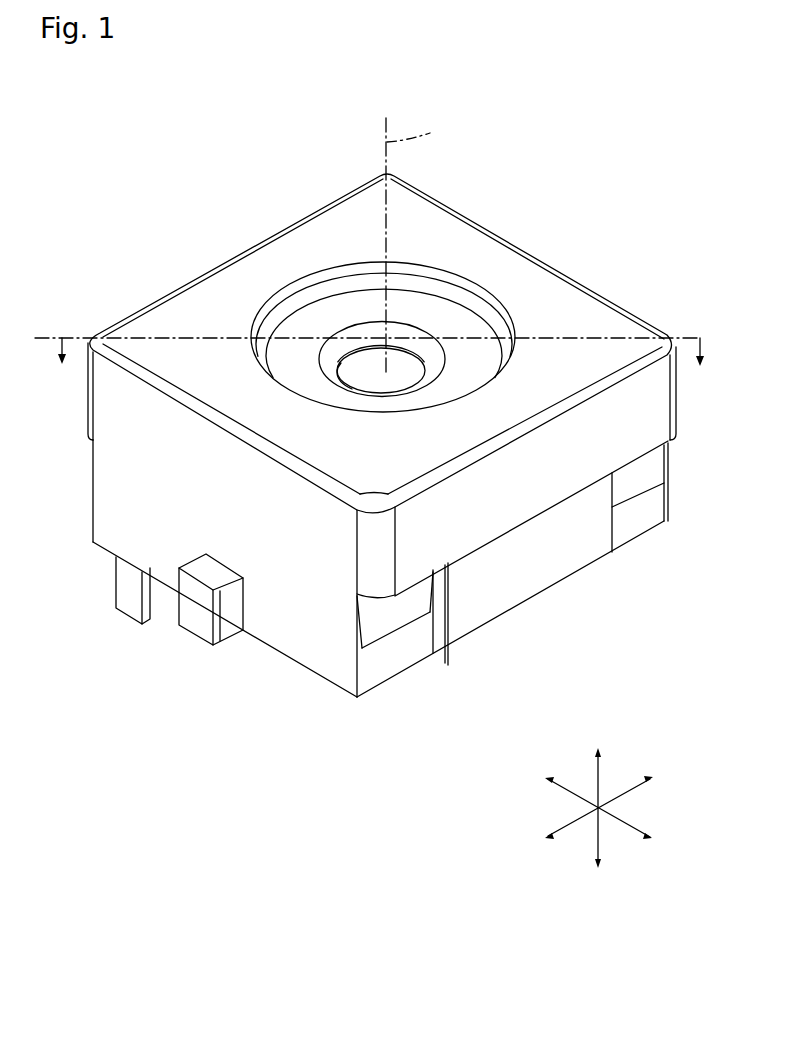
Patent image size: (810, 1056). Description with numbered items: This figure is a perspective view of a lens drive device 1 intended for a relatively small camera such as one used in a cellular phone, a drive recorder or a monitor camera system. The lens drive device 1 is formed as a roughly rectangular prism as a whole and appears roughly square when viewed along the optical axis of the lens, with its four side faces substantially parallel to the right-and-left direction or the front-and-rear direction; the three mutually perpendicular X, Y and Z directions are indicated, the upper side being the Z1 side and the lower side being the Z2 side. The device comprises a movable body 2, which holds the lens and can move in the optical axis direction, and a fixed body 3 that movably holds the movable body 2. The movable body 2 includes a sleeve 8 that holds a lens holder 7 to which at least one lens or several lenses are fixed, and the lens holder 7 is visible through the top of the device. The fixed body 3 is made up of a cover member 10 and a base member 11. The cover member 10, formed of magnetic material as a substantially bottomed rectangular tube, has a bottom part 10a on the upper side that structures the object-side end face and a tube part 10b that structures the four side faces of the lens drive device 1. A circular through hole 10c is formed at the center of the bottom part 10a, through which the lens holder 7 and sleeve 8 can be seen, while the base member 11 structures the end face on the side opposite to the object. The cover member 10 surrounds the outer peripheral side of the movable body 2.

The lens drive device 1 is at (583, 135).
The movable body 2 is at (431, 289).
The fixed body 3 is at (727, 410).
The lens holder 7 is at (438, 312).
The sleeve 8 is at (490, 327).
The cover member 10 is at (677, 402).
The bottom part 10a is at (222, 326).
The tube part 10b is at (222, 504).
The circular through hole 10c is at (318, 275).
The base member 11 is at (668, 475).